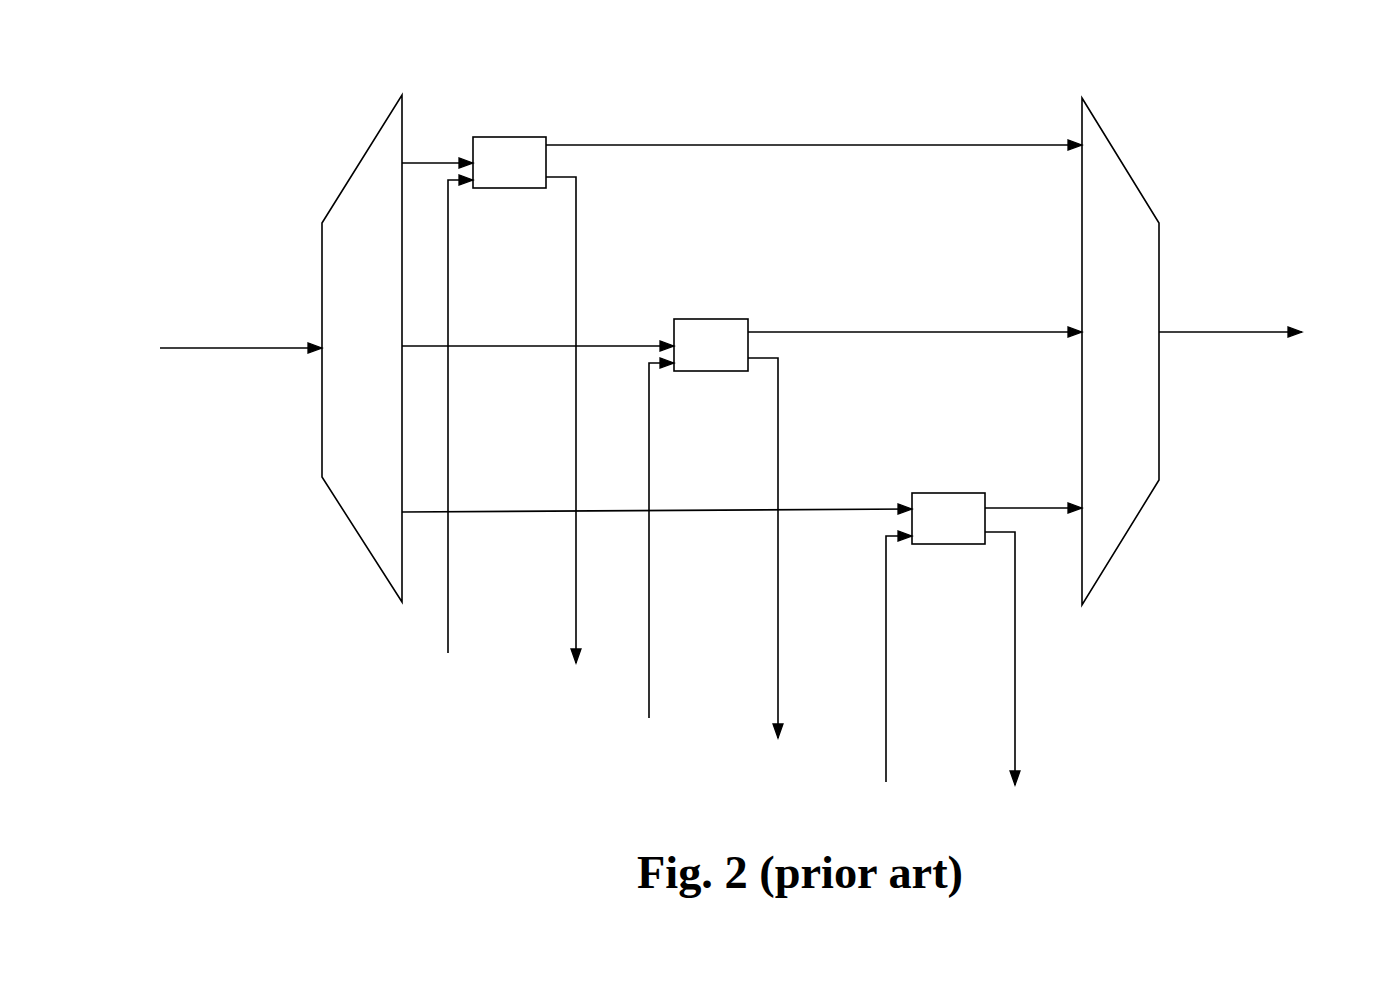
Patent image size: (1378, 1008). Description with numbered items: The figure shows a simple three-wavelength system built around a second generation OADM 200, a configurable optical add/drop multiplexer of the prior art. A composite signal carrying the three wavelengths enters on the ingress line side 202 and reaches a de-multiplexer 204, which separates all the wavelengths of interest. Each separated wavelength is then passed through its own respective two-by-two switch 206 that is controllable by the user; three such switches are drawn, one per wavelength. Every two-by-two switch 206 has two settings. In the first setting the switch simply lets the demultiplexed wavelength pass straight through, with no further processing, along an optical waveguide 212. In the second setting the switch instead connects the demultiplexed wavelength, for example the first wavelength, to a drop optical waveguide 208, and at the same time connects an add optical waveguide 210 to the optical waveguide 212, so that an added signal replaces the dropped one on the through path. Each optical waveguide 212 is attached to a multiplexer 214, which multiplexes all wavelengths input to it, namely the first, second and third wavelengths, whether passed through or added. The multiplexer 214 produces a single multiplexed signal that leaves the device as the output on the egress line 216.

The second generation OADM 200 is at (1202, 116).
The ingress line side input 202 is at (263, 347).
The de-multiplexer 204 is at (340, 507).
The 2×2 switch 206 is at (508, 138).
The drop optical waveguide 208 is at (576, 255).
The add optical waveguide 210 is at (448, 328).
The optical waveguide 212 is at (662, 147).
The multiplexer 214 is at (1147, 198).
The egress line 216 is at (1275, 328).